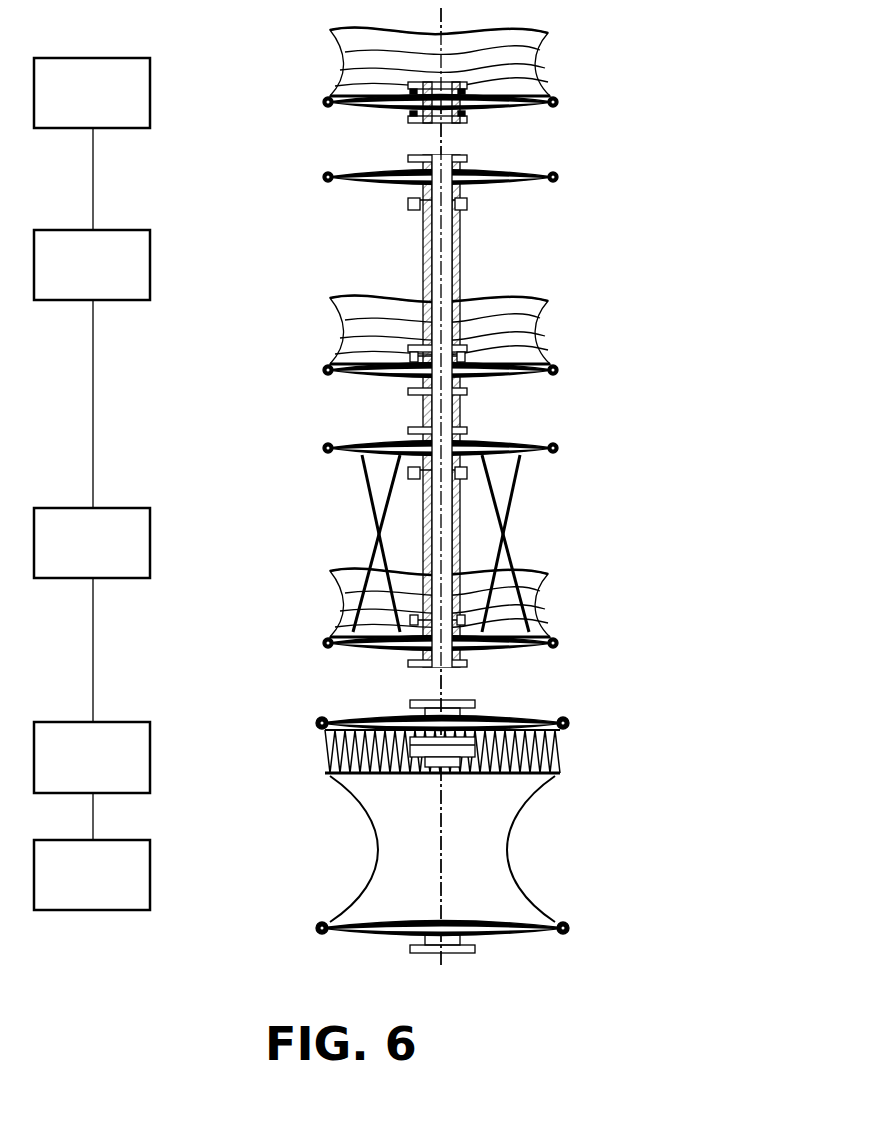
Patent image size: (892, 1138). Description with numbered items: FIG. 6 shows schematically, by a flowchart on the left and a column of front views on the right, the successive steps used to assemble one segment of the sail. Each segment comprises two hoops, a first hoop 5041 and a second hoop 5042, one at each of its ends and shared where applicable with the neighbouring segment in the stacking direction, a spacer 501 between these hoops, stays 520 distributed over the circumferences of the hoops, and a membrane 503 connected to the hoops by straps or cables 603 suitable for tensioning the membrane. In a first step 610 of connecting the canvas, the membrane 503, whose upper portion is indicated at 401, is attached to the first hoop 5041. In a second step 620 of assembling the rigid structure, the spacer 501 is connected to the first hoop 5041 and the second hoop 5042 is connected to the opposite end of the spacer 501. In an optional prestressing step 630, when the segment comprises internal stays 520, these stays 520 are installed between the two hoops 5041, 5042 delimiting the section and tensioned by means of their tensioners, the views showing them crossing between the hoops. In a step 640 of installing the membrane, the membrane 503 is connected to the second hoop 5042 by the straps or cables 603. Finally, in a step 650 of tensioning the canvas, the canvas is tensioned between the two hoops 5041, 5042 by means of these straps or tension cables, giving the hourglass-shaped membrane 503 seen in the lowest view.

The paddle top portion 401 is at (440, 22).
The spacer 501 is at (488, 250).
The membrane 503 is at (530, 57).
The first hoop 5041 is at (414, 115).
The second hoop 5042 is at (480, 192).
The stays 520 is at (515, 490).
The straps or cables 603 is at (560, 752).
The first step of connecting the canvas 610 is at (92, 93).
The second step of assembling the rigid structure 620 is at (92, 265).
The optional prestressing step 630 is at (92, 543).
The step of installing the membrane 640 is at (92, 757).
The step of tensioning the canvas 650 is at (92, 875).